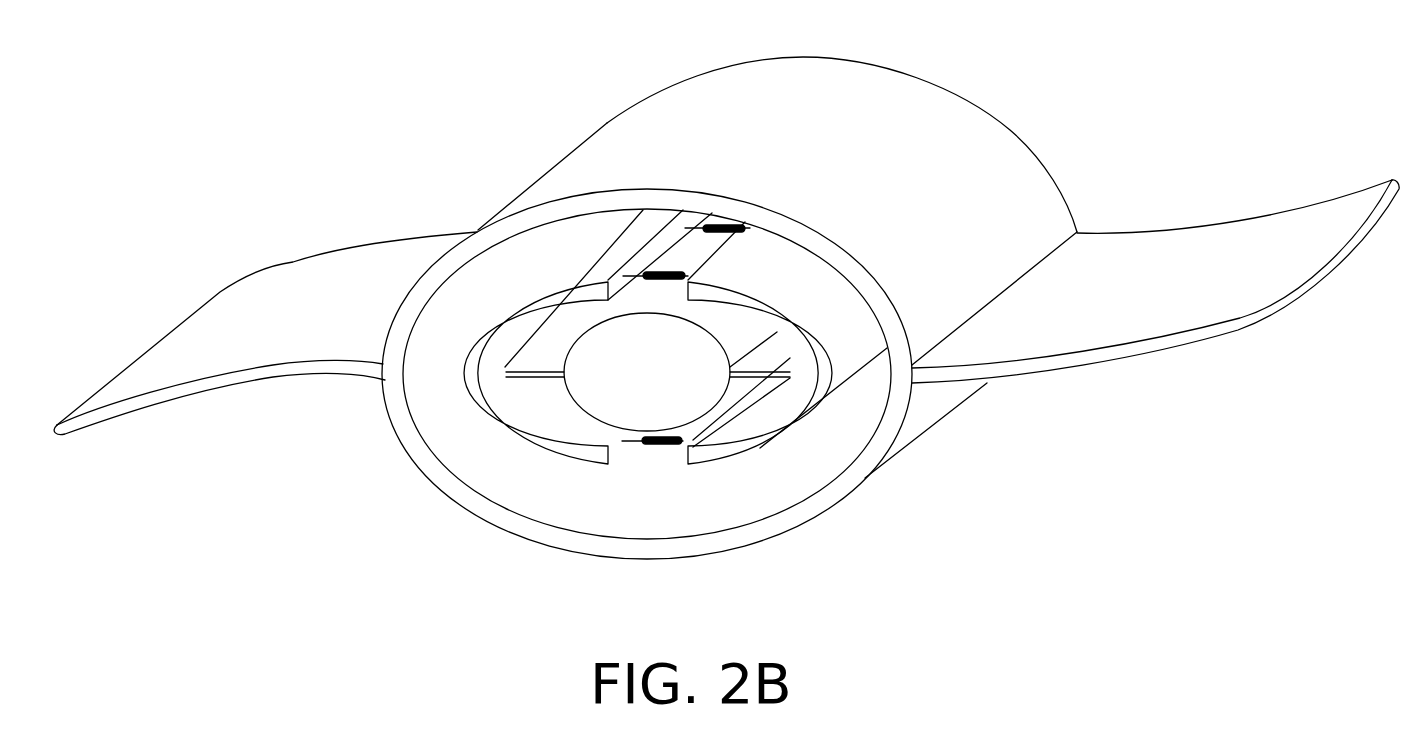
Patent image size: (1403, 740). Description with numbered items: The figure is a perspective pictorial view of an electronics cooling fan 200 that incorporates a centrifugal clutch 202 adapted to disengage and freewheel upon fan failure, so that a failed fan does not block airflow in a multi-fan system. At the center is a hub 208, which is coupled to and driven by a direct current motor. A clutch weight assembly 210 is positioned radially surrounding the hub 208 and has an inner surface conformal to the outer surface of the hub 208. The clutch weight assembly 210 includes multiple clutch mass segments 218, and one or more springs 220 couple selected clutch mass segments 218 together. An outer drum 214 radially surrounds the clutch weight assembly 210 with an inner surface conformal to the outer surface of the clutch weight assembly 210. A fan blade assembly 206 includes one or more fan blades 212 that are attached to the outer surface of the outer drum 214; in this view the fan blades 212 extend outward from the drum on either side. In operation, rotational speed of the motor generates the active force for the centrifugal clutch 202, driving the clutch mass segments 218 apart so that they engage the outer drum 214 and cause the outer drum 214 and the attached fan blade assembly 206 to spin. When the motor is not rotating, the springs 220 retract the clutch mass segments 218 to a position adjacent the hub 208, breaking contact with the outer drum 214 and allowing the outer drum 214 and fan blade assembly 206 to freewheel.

The electronics cooling fan 200 is at (1124, 93).
The centrifugal clutch 202 is at (902, 468).
The fan blade assembly 206 is at (1081, 222).
The hub 208 is at (580, 335).
The clutch weight assembly 210 is at (812, 410).
The fan blades 212 is at (325, 252).
The outer drum 214 is at (890, 183).
The clutch mass segments 218 is at (850, 263).
The springs 220 is at (690, 270).